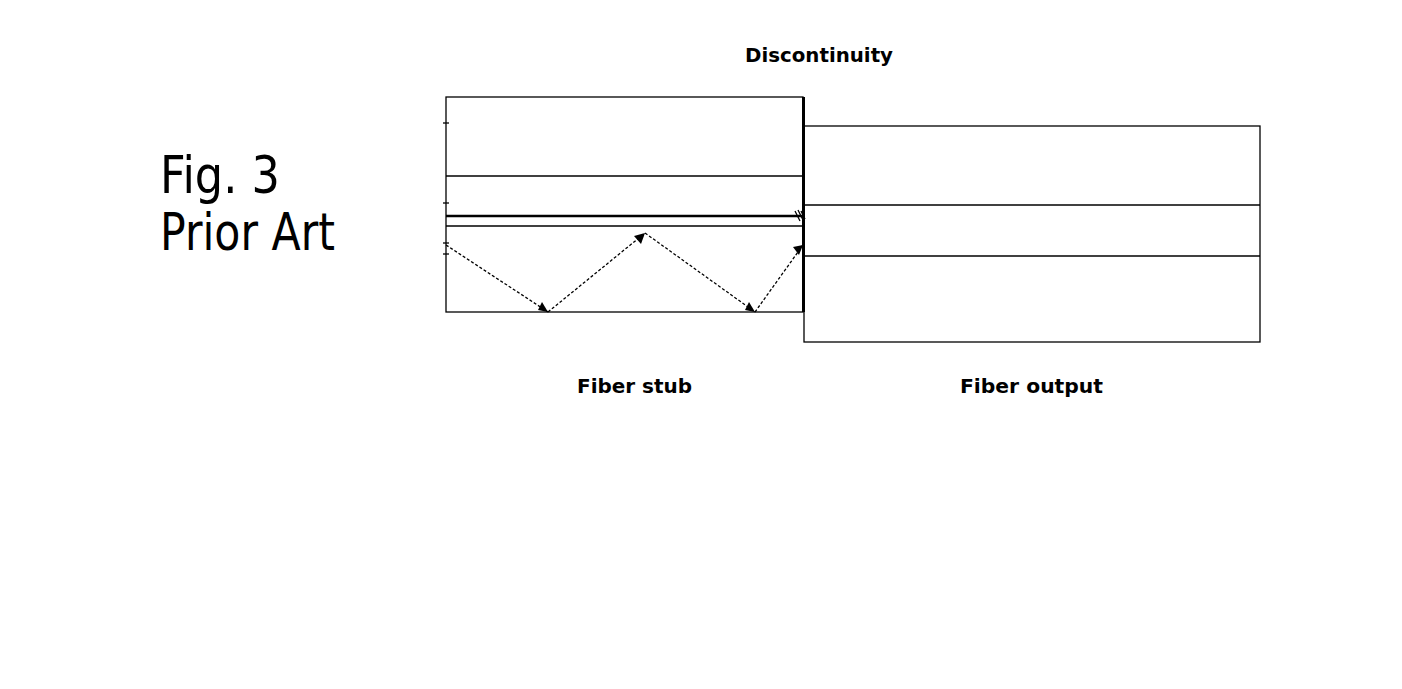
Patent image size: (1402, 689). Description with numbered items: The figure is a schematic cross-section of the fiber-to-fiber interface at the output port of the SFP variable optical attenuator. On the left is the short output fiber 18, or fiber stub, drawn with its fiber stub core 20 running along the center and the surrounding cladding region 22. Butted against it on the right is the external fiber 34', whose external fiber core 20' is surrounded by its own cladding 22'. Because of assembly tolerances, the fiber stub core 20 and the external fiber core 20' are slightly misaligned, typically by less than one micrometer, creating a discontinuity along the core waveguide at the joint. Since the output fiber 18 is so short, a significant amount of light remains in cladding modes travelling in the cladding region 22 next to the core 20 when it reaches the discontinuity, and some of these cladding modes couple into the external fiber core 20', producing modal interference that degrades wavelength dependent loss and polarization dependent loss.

The output fiber 18 is at (615, 92).
The cladding region 22 is at (581, 142).
The fiber stub core 20 is at (582, 220).
The external fiber 34' is at (1032, 194).
The cladding of external fiber 22' is at (1080, 180).
The external fiber core 20' is at (1080, 251).